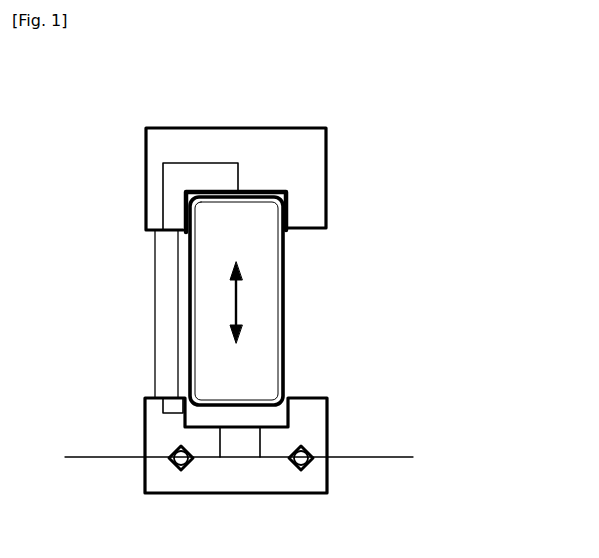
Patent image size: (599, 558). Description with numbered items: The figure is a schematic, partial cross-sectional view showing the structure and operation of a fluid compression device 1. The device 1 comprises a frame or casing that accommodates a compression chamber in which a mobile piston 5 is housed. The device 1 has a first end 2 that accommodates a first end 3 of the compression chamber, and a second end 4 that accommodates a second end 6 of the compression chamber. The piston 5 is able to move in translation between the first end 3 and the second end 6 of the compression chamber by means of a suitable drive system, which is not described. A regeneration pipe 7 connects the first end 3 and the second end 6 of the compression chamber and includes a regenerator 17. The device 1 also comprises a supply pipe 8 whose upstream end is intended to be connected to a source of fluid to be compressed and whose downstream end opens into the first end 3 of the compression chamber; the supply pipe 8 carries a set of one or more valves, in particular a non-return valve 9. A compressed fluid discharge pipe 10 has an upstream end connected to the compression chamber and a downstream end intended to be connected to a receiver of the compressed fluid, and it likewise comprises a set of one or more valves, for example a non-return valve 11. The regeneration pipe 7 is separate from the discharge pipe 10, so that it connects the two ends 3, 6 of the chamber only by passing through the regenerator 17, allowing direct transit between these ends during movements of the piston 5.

The fluid compression device 1 is at (492, 322).
The first end of the device 2 is at (208, 484).
The first end of the compression chamber 3 is at (236, 403).
The second end of the device 4 is at (286, 157).
The mobile piston 5 is at (270, 310).
The second end of the compression chamber 6 is at (287, 200).
The regeneration pipe 7 is at (145, 400).
The supply pipe 8 is at (205, 455).
The non-return valve 9 is at (182, 452).
The compressed fluid discharge pipe 10 is at (370, 456).
The non-return valve 11 is at (295, 470).
The regenerator 17 is at (155, 316).